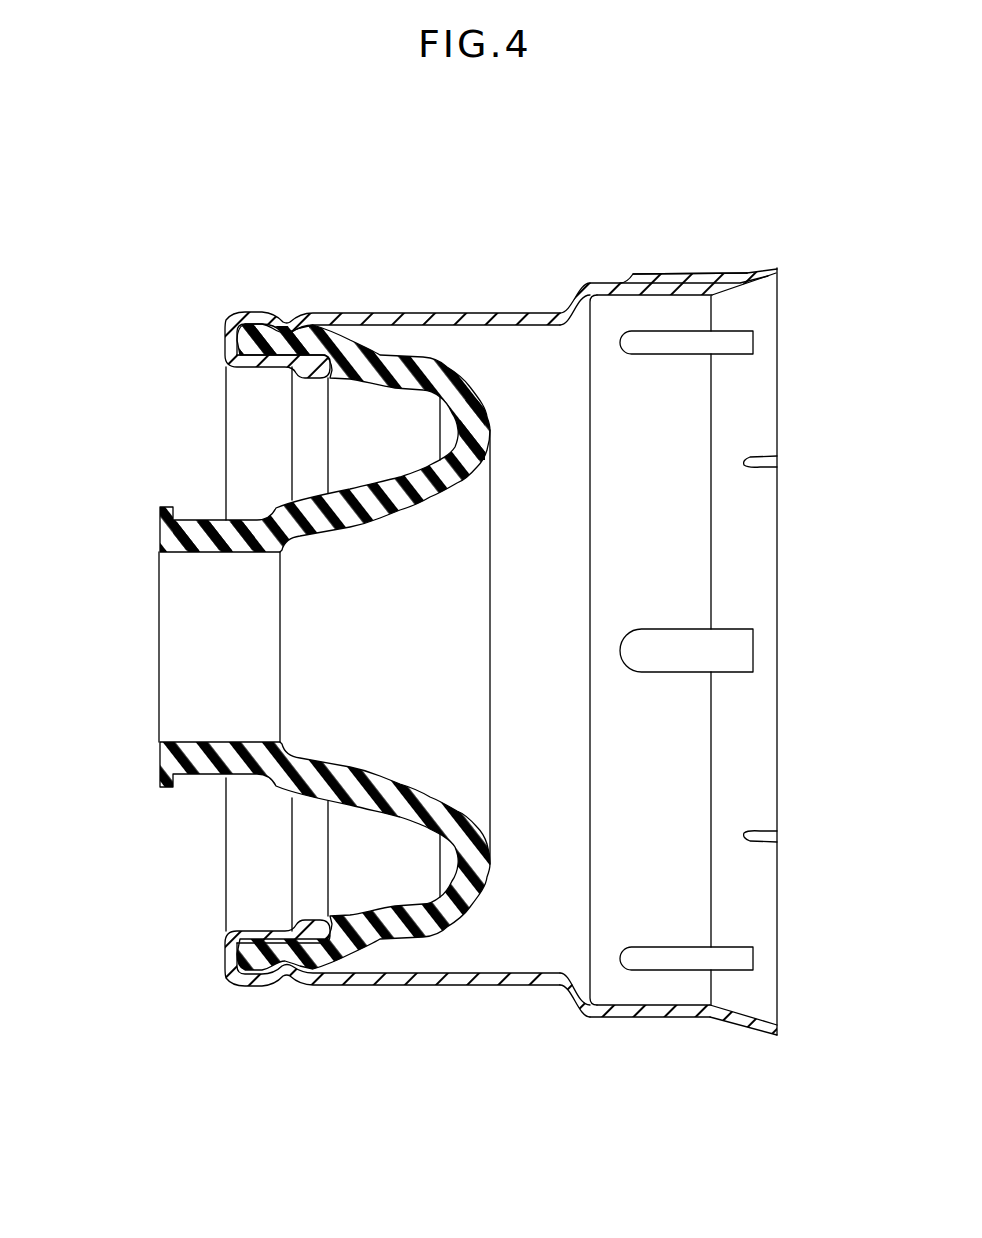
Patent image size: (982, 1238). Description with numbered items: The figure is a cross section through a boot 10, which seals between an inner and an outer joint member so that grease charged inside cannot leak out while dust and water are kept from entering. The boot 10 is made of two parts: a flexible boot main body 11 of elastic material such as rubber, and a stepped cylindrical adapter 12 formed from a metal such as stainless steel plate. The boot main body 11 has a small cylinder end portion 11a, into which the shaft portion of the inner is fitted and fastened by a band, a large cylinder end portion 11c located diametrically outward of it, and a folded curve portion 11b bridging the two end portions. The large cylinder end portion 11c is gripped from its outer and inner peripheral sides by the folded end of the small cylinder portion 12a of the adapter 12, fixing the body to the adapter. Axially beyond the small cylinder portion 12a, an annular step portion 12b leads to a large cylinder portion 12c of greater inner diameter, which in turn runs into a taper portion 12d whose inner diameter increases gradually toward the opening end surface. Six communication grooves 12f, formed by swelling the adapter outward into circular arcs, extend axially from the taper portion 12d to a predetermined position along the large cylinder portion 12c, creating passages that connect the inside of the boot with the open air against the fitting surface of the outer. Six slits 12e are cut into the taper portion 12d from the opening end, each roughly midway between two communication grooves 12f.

The boot 10 is at (334, 219).
The boot main body 11 is at (347, 493).
The small cylinder end portion 11a is at (197, 533).
The curve portion 11b is at (491, 427).
The large cylinder end portion 11c is at (253, 340).
The adapter 12 is at (445, 276).
The small cylinder portion 12a is at (473, 312).
The annular step portion 12b is at (566, 290).
The large cylinder portion 12c is at (632, 1018).
The taper portion 12d is at (752, 1033).
The slit 12e is at (867, 461).
The communication groove 12f is at (672, 290).